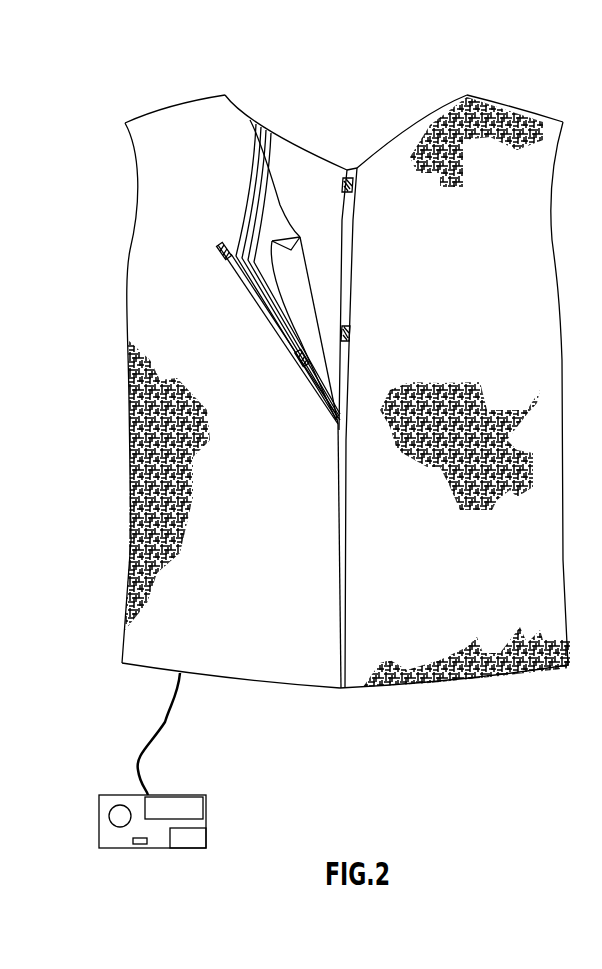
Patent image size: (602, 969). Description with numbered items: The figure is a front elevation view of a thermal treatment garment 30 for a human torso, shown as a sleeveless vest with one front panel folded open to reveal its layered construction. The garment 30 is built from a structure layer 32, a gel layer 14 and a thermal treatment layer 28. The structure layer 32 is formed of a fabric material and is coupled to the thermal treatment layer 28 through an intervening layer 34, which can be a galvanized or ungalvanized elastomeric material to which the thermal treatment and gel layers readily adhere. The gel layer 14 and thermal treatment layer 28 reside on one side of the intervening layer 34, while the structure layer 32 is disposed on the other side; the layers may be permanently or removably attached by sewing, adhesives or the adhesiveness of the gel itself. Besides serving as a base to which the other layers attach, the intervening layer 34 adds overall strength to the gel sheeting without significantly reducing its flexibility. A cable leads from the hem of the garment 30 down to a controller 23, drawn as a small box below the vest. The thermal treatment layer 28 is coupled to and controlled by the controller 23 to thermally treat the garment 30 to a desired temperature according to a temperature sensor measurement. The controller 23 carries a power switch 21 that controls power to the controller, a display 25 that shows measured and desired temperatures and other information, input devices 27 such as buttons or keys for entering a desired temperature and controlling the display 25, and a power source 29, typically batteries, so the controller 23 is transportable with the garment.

The thermal treatment garment 30 is at (530, 98).
The thermal treatment layer 28 is at (262, 213).
The intervening layer 34 is at (247, 222).
The structure layer 32 is at (229, 242).
The gel layer 14 is at (262, 258).
The controller 23 is at (112, 785).
The power switch 21 is at (107, 816).
The display 25 is at (185, 805).
The input devices 27 is at (140, 849).
The power source 29 is at (187, 842).